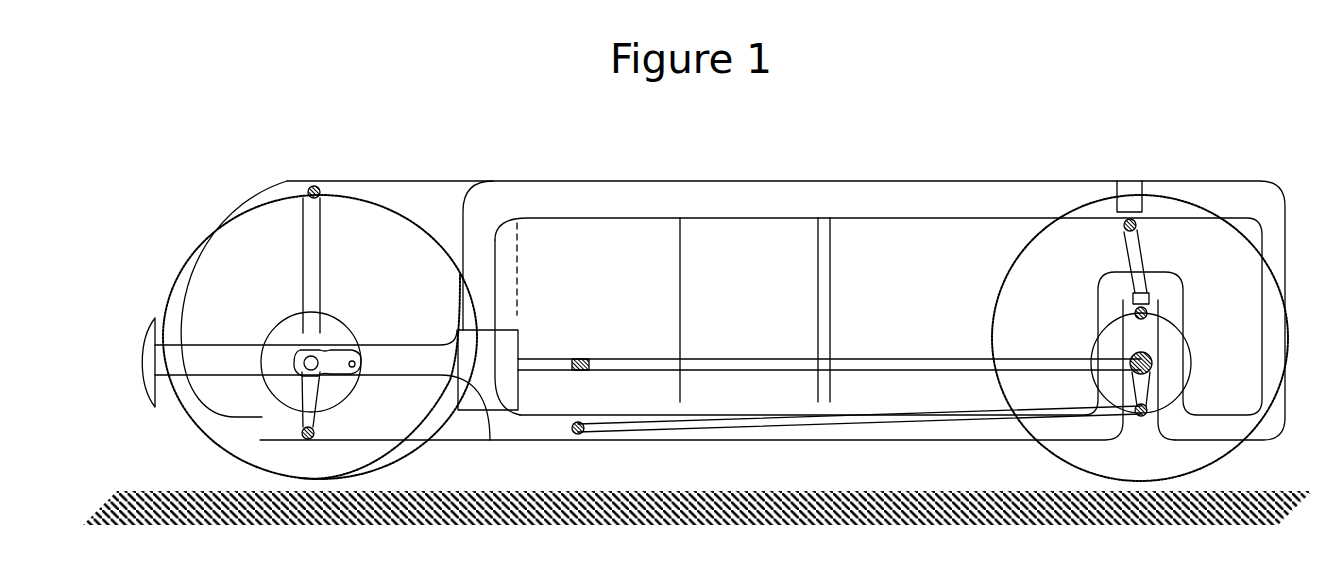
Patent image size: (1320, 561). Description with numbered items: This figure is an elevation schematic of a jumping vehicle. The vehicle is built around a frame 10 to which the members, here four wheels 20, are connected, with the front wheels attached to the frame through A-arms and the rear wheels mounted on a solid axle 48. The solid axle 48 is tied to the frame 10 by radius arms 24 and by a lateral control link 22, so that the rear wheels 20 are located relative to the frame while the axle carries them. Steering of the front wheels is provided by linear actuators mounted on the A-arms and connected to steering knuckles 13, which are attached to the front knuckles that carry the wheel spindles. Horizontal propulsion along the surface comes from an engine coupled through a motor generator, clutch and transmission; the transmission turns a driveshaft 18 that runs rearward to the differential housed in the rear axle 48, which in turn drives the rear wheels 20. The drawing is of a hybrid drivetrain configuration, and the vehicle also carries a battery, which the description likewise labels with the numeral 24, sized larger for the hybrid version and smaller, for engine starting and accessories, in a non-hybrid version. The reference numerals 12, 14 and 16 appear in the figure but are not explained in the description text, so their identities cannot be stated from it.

The frame 10 is at (920, 168).
The front bumper 12 is at (148, 313).
The steering knuckle 13 is at (338, 325).
The front crank arm 14 is at (308, 252).
The front wheel well 16 is at (405, 315).
The driveshaft 18 is at (560, 370).
The wheel 20 is at (368, 195).
The lateral control link 22 is at (1123, 217).
The radius arm 24 is at (687, 428).
The solid axle 48 is at (1150, 355).